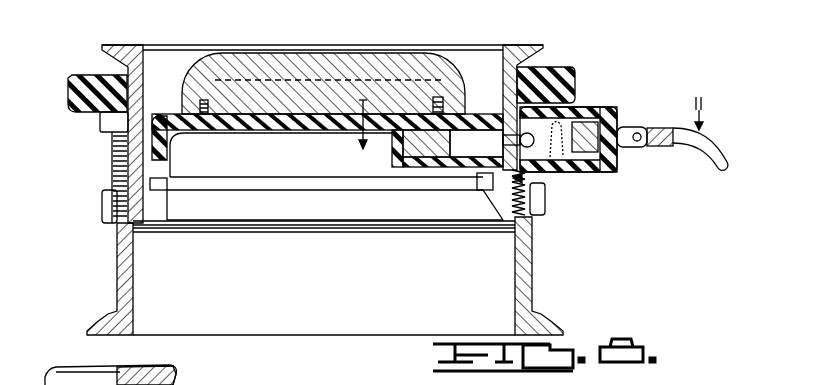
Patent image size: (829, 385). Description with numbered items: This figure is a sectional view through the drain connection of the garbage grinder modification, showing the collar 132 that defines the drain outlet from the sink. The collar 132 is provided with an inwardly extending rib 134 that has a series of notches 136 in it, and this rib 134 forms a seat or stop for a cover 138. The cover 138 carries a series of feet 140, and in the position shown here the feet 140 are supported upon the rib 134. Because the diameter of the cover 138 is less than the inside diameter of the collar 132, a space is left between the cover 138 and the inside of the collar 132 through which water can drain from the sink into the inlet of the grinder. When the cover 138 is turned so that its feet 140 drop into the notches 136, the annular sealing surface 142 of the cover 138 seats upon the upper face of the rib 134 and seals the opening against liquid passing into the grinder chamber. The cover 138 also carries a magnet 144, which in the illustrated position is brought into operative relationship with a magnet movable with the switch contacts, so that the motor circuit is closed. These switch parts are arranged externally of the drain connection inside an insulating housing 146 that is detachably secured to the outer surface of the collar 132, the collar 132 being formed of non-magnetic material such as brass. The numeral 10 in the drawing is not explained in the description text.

The collar 132 is at (503, 62).
The inwardly extending rib 134 is at (260, 185).
The notches 136 is at (162, 192).
The cover 138 is at (266, 118).
The feet 140 is at (191, 172).
The annular sealing surface 142 is at (113, 178).
The magnet 144 is at (423, 150).
The insulating housing 146 is at (600, 110).
The direction indicator 10 is at (522, 129).